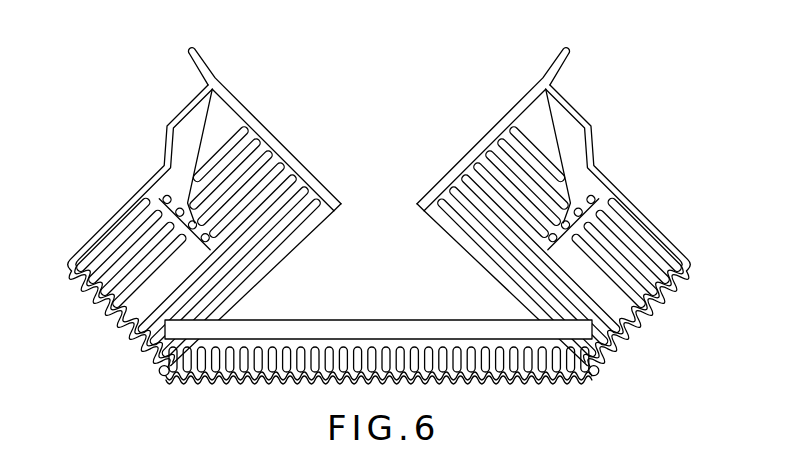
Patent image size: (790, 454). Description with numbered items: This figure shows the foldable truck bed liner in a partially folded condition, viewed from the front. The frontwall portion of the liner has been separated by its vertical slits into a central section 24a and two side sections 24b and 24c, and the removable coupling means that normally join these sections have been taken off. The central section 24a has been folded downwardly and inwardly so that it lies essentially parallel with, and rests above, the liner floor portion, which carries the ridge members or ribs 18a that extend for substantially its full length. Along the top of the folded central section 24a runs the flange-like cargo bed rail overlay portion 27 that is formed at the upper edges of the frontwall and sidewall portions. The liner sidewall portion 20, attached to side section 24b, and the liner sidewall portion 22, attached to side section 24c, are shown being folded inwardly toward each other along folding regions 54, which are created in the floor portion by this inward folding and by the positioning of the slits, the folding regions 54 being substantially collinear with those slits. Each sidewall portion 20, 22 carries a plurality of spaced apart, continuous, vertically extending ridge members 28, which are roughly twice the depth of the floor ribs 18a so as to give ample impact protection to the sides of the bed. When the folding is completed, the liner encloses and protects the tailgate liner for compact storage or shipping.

The liner sidewall portion 20 is at (123, 210).
The liner sidewall portion 22 is at (645, 205).
The central section 24a is at (378, 346).
The side section 24b is at (273, 137).
The side section 24c is at (482, 137).
The rail overlay portion 27 is at (342, 330).
The ridge member 28 is at (190, 127).
The rib 18a is at (550, 367).
The folding region 54 is at (165, 374).